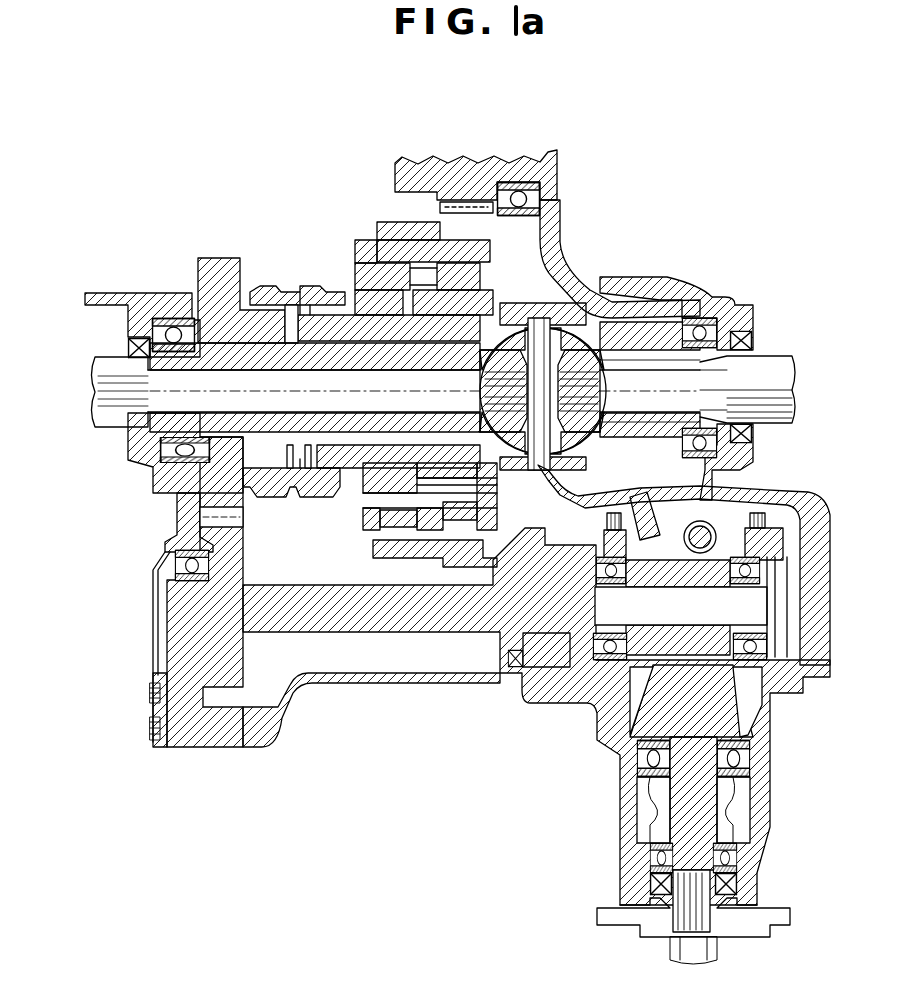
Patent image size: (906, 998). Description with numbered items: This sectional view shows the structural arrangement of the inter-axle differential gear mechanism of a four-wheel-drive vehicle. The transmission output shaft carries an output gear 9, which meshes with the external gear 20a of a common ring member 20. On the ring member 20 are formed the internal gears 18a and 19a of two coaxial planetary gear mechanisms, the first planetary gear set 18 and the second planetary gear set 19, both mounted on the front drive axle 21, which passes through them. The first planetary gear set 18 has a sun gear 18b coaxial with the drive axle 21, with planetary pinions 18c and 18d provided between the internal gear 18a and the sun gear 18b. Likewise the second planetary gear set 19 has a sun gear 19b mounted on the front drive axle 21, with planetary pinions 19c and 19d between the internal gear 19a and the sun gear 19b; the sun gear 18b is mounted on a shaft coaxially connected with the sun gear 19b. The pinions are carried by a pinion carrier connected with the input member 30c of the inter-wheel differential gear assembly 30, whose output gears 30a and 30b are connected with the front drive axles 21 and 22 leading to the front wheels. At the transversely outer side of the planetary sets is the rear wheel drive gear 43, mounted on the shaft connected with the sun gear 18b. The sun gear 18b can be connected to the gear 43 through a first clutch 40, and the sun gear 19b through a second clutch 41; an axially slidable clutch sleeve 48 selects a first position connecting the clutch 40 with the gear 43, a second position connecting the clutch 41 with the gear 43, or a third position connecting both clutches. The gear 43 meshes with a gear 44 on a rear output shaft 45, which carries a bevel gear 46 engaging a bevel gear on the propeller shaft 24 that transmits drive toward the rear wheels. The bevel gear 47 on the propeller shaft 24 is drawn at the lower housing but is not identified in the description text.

The output gear 9 is at (400, 178).
The first planetary gear set 18 is at (396, 540).
The internal gear 18a is at (372, 245).
The sun gear 18b is at (360, 292).
The planetary pinion 18c is at (355, 255).
The planetary pinion 18d is at (378, 530).
The second planetary gear set 19 is at (470, 520).
The internal gear 19a is at (433, 240).
The sun gear 19b is at (462, 371).
The planetary pinion 19c is at (482, 258).
The planetary pinion 19d is at (440, 530).
The ring member 20 is at (391, 225).
The external gear 20a is at (457, 208).
The front drive axle 21 is at (108, 372).
The front drive axle 22 is at (766, 358).
The propeller shaft 24 is at (655, 822).
The inter-wheel differential gear assembly 30 is at (580, 300).
The output gear 30a is at (512, 462).
The output gear 30b is at (625, 345).
The input member 30c is at (508, 322).
The first clutch 40 is at (315, 290).
The second clutch 41 is at (284, 333).
The rear wheel drive gear 43 is at (200, 292).
The gear 44 is at (235, 655).
The rear output shaft 45 is at (405, 615).
The bevel gear 46 is at (648, 524).
The bevel gear 47 is at (768, 706).
The clutch sleeve 48 is at (266, 290).